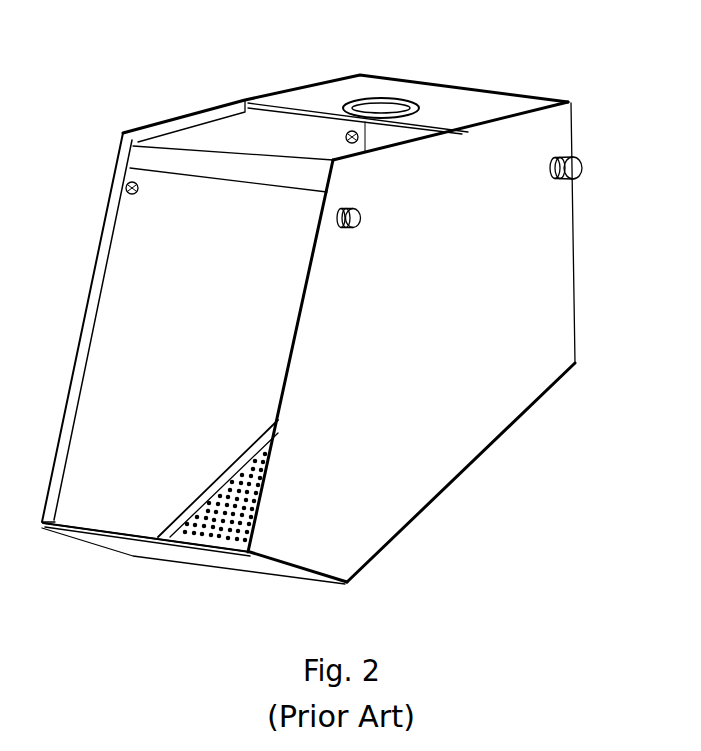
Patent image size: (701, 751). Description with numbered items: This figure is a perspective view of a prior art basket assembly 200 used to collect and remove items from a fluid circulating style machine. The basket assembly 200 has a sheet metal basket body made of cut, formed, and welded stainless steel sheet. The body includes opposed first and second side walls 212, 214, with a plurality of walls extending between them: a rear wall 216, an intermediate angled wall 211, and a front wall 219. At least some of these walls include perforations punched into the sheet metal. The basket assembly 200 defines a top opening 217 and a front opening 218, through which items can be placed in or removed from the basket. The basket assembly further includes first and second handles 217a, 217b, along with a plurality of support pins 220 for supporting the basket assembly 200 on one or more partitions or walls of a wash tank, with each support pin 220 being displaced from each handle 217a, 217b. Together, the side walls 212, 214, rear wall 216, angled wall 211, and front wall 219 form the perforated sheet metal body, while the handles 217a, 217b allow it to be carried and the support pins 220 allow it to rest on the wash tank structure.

The basket assembly 200 is at (188, 68).
The intermediate angled wall 211 is at (518, 422).
The first side wall 212 is at (127, 345).
The second side wall 214 is at (407, 435).
The rear wall 216 is at (576, 281).
The top opening 217 is at (280, 124).
The first handle 217a is at (155, 160).
The second handle 217b is at (342, 89).
The front opening 218 is at (120, 442).
The front wall 219 is at (233, 557).
The support pins 220 is at (585, 157).